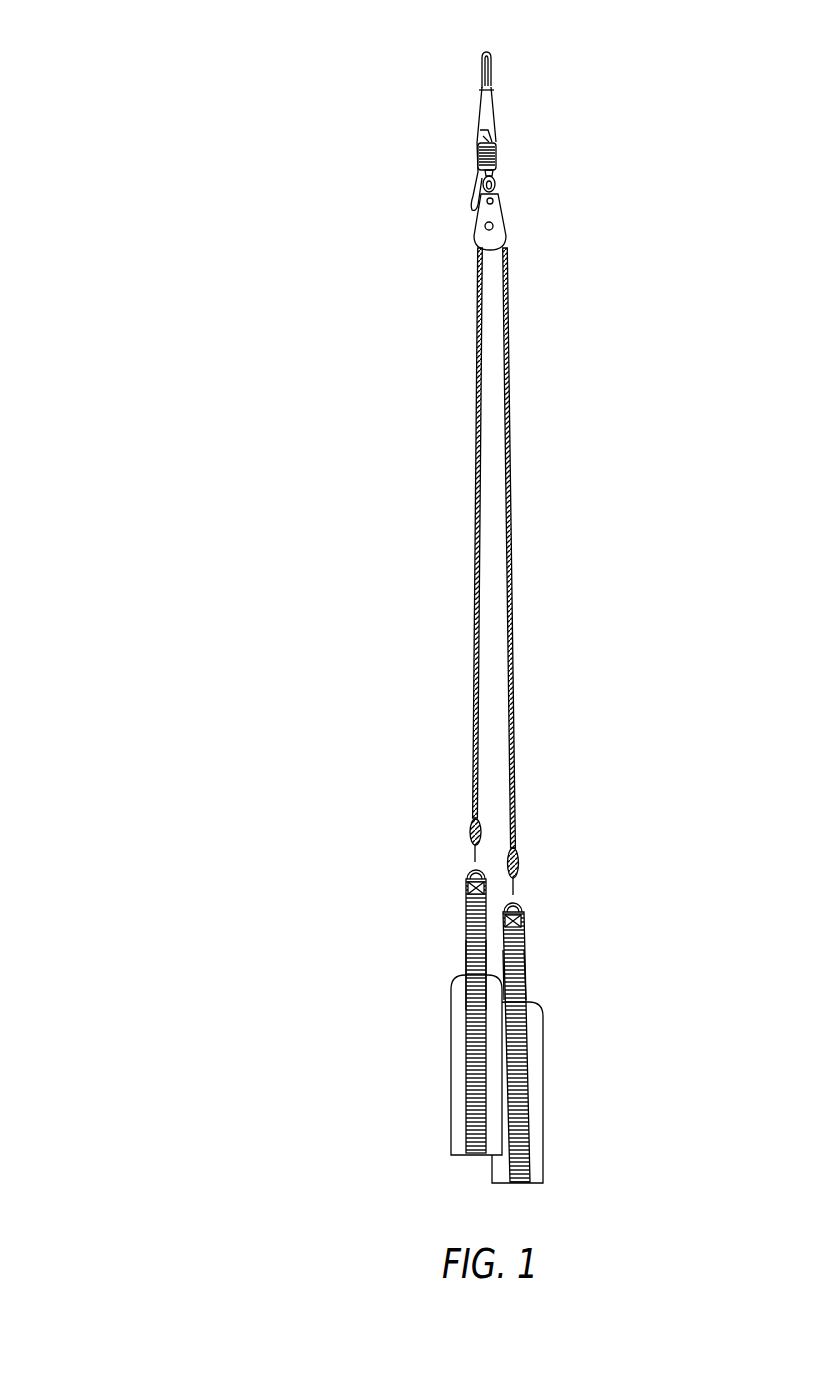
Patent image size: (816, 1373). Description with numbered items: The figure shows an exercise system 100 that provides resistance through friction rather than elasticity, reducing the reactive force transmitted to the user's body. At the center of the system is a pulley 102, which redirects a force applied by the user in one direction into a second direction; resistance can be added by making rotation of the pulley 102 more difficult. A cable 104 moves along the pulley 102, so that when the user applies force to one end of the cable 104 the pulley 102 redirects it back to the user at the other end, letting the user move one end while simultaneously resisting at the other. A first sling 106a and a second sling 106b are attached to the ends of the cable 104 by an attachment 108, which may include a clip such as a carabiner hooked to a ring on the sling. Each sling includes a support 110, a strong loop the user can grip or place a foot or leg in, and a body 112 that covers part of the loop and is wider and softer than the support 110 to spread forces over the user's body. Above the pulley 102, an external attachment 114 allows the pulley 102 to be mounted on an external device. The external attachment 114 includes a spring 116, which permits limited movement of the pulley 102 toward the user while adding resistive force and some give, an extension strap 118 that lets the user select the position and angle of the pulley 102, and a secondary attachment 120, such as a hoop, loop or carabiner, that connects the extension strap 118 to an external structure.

The exercise system 100 is at (186, 86).
The pulley 102 is at (500, 215).
The cable 104 is at (507, 323).
The first sling 106a is at (527, 935).
The second sling 106b is at (465, 910).
The attachment 108 is at (515, 880).
The support 110 is at (466, 955).
The body 112 is at (458, 1072).
The external attachment 114 is at (501, 144).
The spring 116 is at (474, 163).
The extension strap 118 is at (472, 118).
The secondary attachment 120 is at (480, 62).